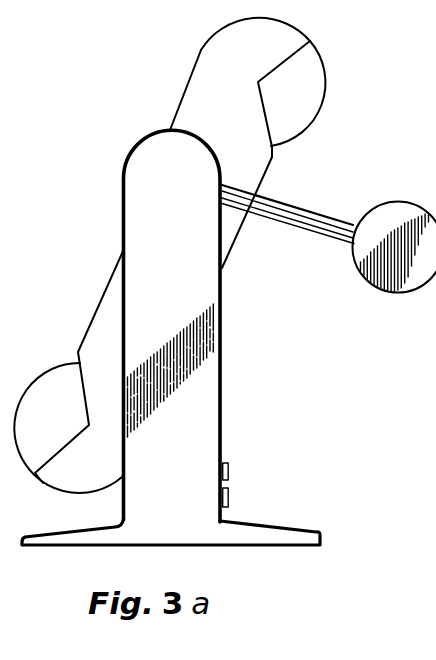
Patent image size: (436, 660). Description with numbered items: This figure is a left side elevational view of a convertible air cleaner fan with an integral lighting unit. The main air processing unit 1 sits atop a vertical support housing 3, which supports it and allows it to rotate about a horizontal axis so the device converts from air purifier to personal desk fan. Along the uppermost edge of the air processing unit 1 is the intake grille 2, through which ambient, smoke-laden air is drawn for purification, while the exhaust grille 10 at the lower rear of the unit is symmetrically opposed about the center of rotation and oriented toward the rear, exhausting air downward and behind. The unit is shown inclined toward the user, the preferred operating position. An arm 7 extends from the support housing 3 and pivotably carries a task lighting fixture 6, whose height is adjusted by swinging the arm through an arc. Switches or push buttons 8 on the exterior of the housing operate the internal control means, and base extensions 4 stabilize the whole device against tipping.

The main air processing unit 1 is at (217, 87).
The intake grille 2 is at (302, 92).
The vertical support housing 3 is at (202, 407).
The base extensions 4 is at (288, 537).
The task lighting fixture 6 is at (423, 273).
The arm 7 is at (302, 220).
The switches or push buttons 8 is at (228, 475).
The exhaust grille 10 is at (66, 388).